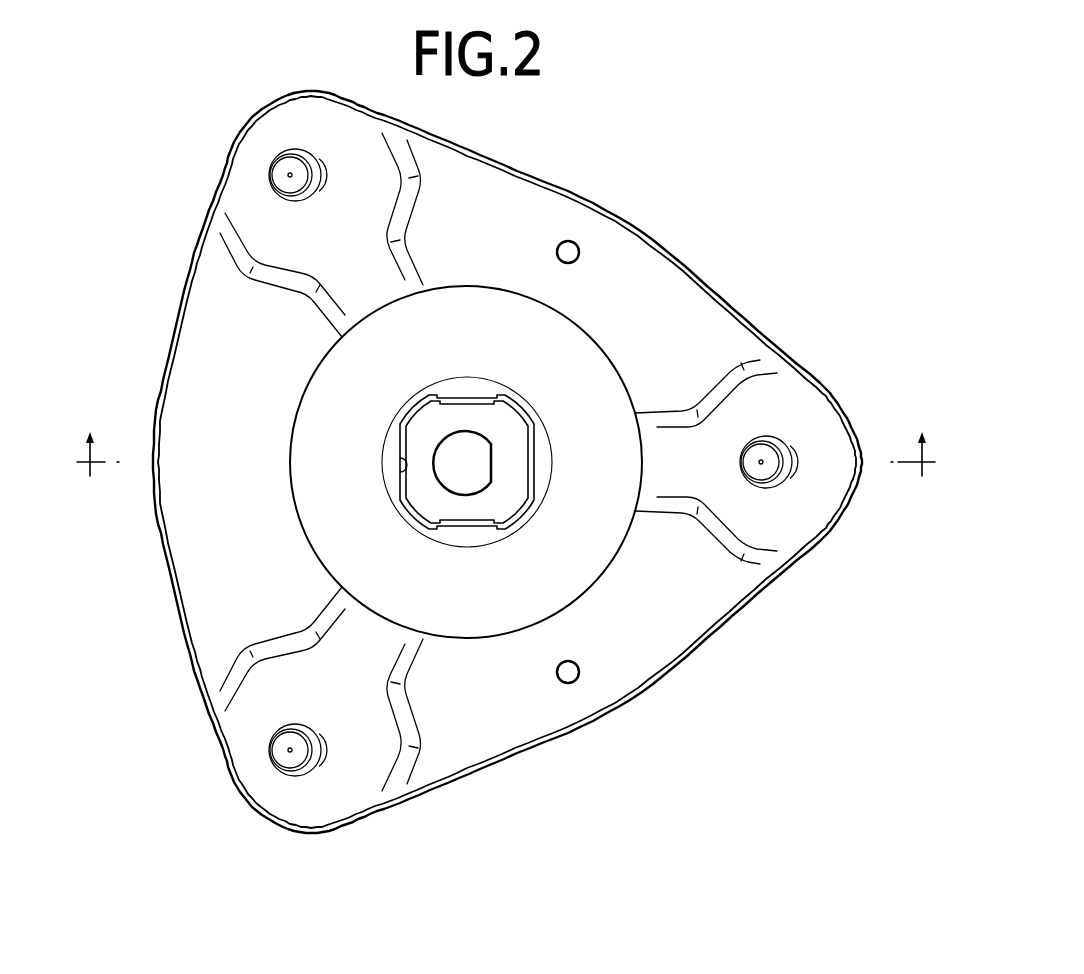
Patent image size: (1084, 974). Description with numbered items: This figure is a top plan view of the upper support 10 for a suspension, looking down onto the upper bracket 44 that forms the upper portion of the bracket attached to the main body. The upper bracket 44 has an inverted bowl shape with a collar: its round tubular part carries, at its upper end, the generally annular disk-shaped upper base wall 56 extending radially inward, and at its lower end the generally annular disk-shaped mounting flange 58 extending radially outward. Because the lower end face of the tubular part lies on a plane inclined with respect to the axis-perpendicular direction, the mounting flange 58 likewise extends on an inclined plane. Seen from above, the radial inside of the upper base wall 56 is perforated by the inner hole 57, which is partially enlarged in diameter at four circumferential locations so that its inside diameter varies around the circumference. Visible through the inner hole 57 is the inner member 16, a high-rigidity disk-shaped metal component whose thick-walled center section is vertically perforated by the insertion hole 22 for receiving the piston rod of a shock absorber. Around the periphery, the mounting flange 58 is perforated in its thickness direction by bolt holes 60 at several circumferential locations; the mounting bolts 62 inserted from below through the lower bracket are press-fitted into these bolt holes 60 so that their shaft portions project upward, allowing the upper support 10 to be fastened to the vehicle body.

The upper support 10 is at (712, 195).
The inner member 16 is at (510, 422).
The insertion hole 22 is at (443, 440).
The upper bracket 44 is at (178, 292).
The upper base wall 56 is at (322, 411).
The inner hole 57 is at (405, 468).
The mounting flange 58 is at (528, 205).
The bolt holes 60 is at (318, 186).
The mounting bolts 62 is at (289, 183).